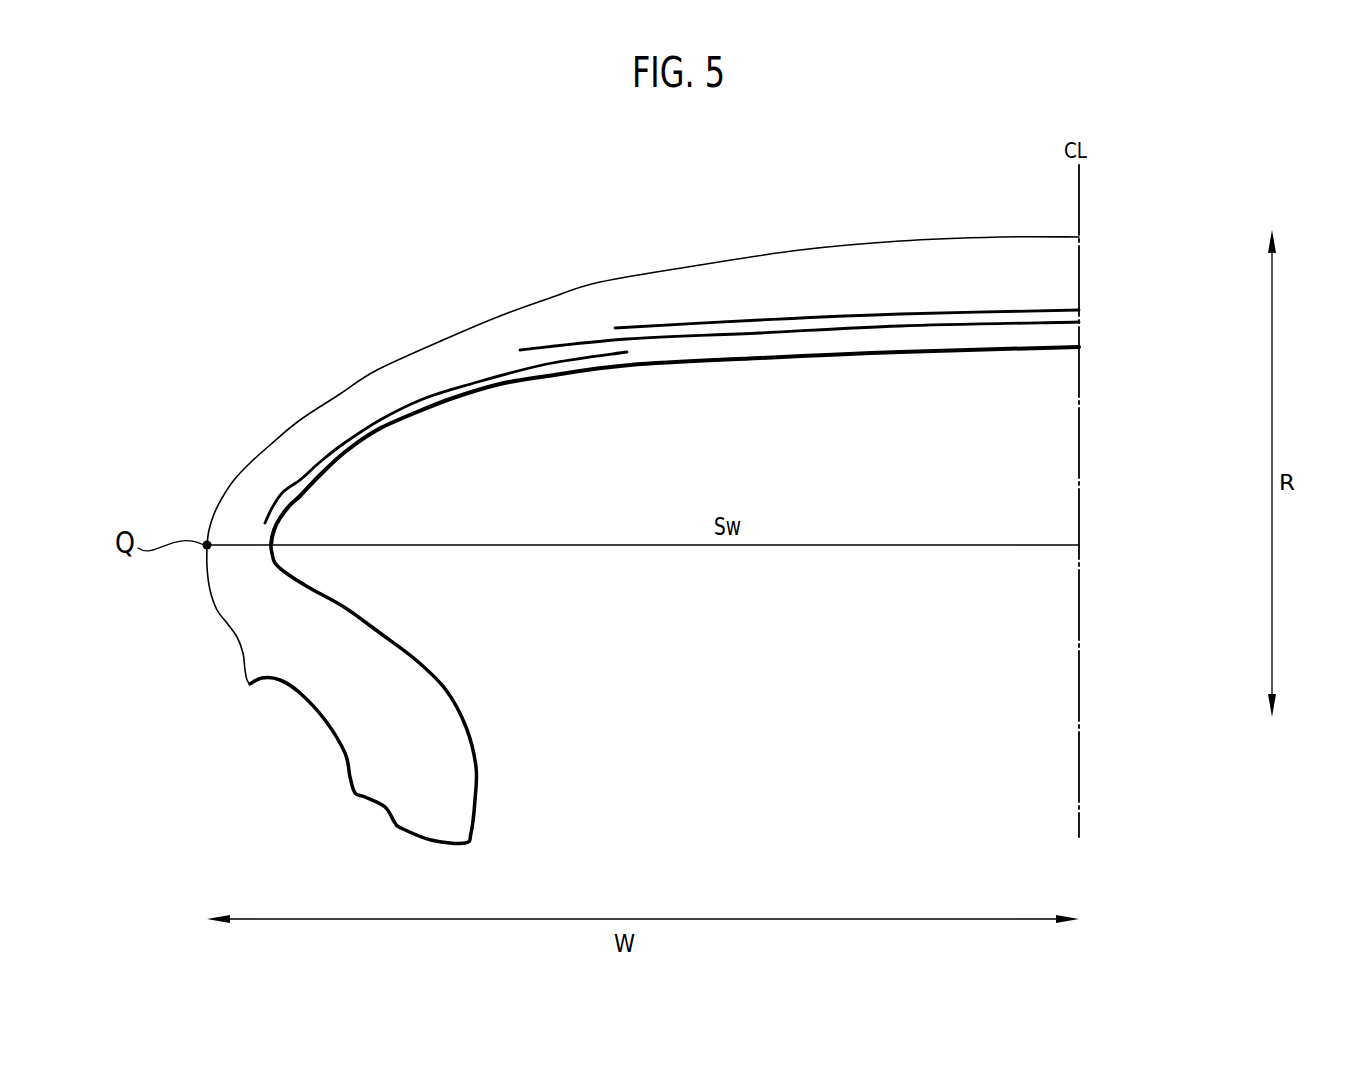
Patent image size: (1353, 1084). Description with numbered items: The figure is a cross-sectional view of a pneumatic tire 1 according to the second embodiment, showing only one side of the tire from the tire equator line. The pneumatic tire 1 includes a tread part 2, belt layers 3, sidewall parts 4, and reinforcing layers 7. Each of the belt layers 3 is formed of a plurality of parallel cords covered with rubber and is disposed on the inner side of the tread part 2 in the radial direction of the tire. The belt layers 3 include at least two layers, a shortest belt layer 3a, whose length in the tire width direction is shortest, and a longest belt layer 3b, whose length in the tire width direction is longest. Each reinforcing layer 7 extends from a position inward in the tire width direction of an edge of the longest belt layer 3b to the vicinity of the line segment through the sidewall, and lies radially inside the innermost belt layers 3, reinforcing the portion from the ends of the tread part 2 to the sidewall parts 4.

The pneumatic tire 1 is at (1175, 148).
The tread part 2 is at (922, 238).
The belt layers 3 is at (990, 415).
The shortest belt layer 3a is at (898, 315).
The longest belt layer 3b is at (972, 327).
The sidewall parts 4 is at (230, 582).
The reinforcing layers 7 is at (467, 388).